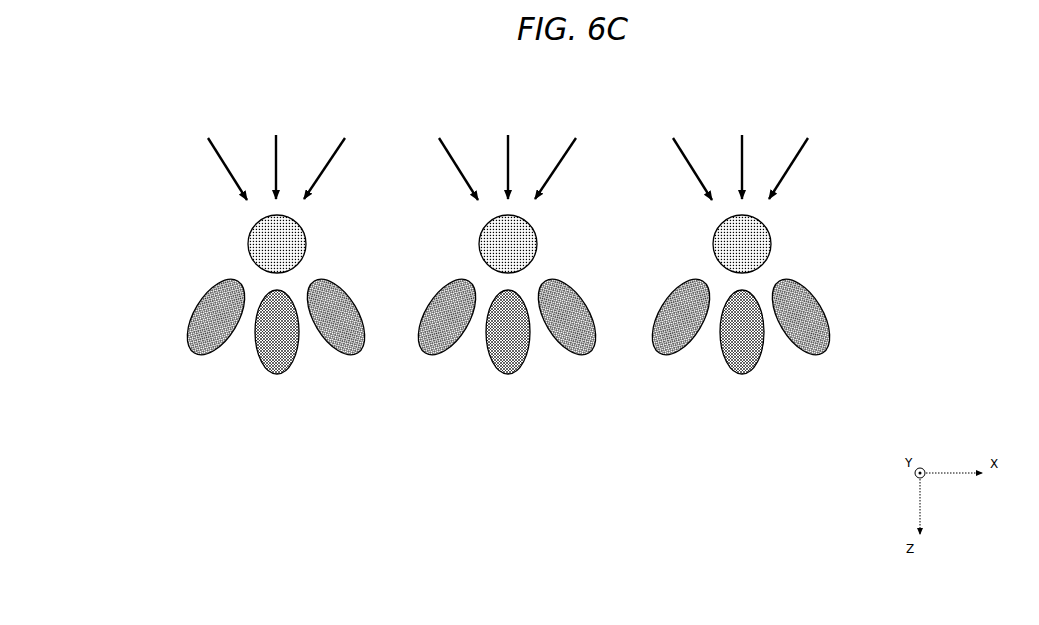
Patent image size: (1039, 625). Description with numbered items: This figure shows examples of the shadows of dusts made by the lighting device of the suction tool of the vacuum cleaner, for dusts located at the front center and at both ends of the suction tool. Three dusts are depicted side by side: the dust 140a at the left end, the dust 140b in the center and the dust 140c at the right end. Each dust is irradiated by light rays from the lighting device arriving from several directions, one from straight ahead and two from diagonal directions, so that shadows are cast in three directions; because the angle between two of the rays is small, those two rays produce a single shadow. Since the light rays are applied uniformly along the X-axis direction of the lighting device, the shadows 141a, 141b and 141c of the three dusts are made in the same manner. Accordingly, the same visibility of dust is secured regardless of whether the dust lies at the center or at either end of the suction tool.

The dust in the left end 140a is at (247, 240).
The dust in the center 140b is at (538, 233).
The dust in the right end 140c is at (768, 233).
The shadows 141a is at (175, 370).
The shadows 141b is at (406, 370).
The shadows 141c is at (641, 370).